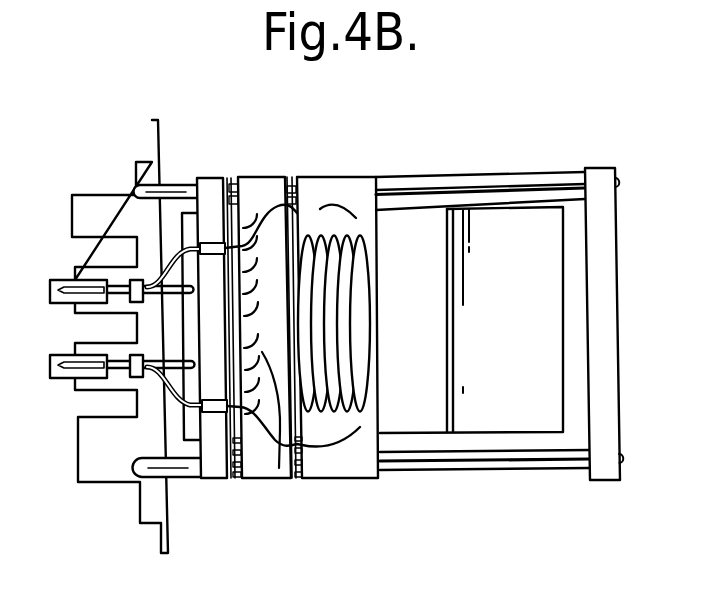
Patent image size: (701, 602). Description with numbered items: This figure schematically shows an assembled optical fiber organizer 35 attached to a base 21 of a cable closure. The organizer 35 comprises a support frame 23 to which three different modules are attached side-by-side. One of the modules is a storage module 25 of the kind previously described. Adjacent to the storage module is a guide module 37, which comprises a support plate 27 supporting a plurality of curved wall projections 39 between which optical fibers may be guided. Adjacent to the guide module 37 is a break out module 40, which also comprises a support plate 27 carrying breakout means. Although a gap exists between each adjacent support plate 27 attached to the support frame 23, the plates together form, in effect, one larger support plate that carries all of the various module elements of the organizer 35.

The base 21 is at (150, 494).
The support frame 23 is at (529, 186).
The storage module 25 is at (386, 162).
The support plate 27 is at (218, 470).
The optical fiber organizer 35 is at (326, 145).
The guide module 37 is at (273, 228).
The curved wall projections 39 is at (279, 468).
The break out module 40 is at (211, 276).